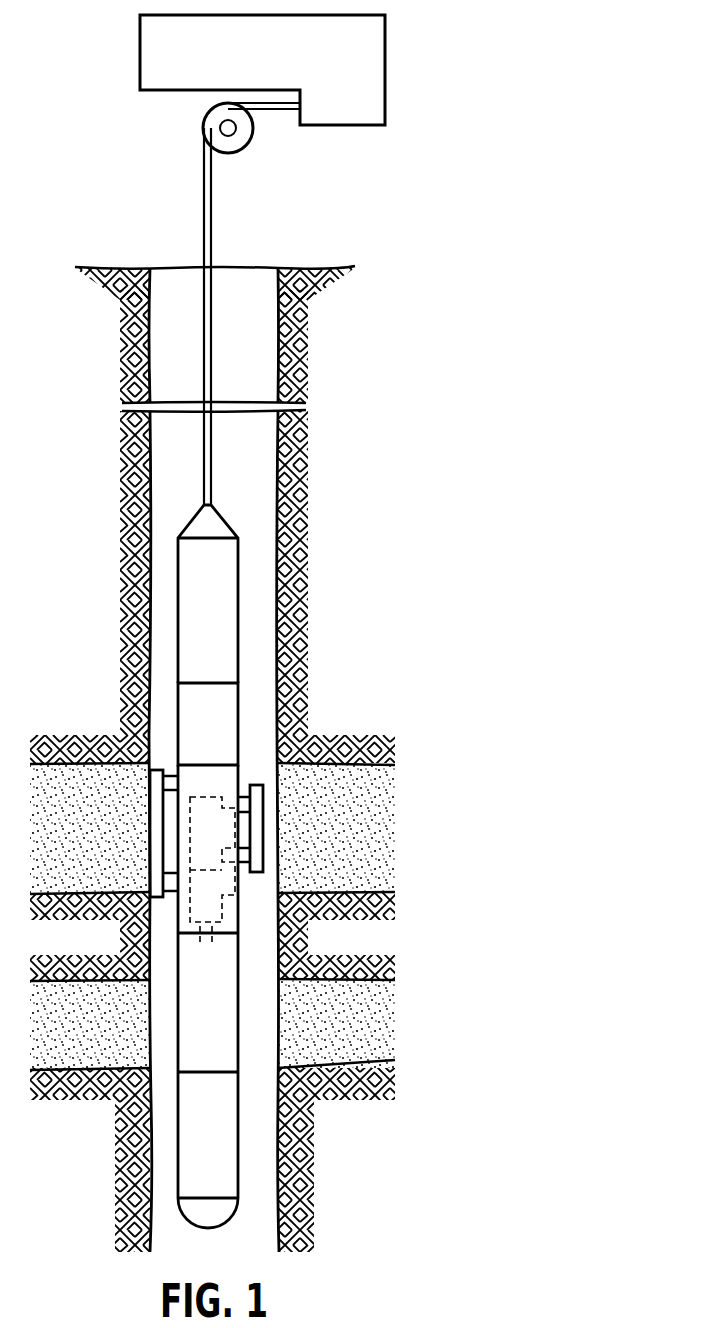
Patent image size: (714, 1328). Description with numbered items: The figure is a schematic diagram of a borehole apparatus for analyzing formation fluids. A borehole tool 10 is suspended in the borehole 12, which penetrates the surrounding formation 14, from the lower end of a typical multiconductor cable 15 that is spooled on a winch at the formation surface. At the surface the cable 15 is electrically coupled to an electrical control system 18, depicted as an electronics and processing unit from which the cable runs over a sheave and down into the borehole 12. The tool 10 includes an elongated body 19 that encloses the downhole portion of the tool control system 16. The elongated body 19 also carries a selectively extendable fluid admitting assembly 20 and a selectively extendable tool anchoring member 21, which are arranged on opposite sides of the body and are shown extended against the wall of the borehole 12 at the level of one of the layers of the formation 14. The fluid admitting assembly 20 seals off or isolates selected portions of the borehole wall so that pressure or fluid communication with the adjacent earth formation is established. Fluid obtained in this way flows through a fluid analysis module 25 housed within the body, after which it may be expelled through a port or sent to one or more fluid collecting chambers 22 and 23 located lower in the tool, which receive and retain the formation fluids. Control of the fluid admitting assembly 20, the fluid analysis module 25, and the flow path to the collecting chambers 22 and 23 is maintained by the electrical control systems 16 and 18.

The borehole tool 10 is at (258, 693).
The borehole 12 is at (278, 328).
The formation 14 is at (379, 847).
The multiconductor cable 15 is at (204, 180).
The downhole portion of the tool control system 16 is at (221, 734).
The electrical control system 18 is at (325, 125).
The elongated body 19 is at (225, 575).
The fluid admitting assembly 20 is at (263, 800).
The tool anchoring member 21 is at (150, 808).
The fluid collecting chamber 22 is at (221, 1007).
The fluid collecting chamber 23 is at (221, 1122).
The fluid analysis module 25 is at (228, 902).